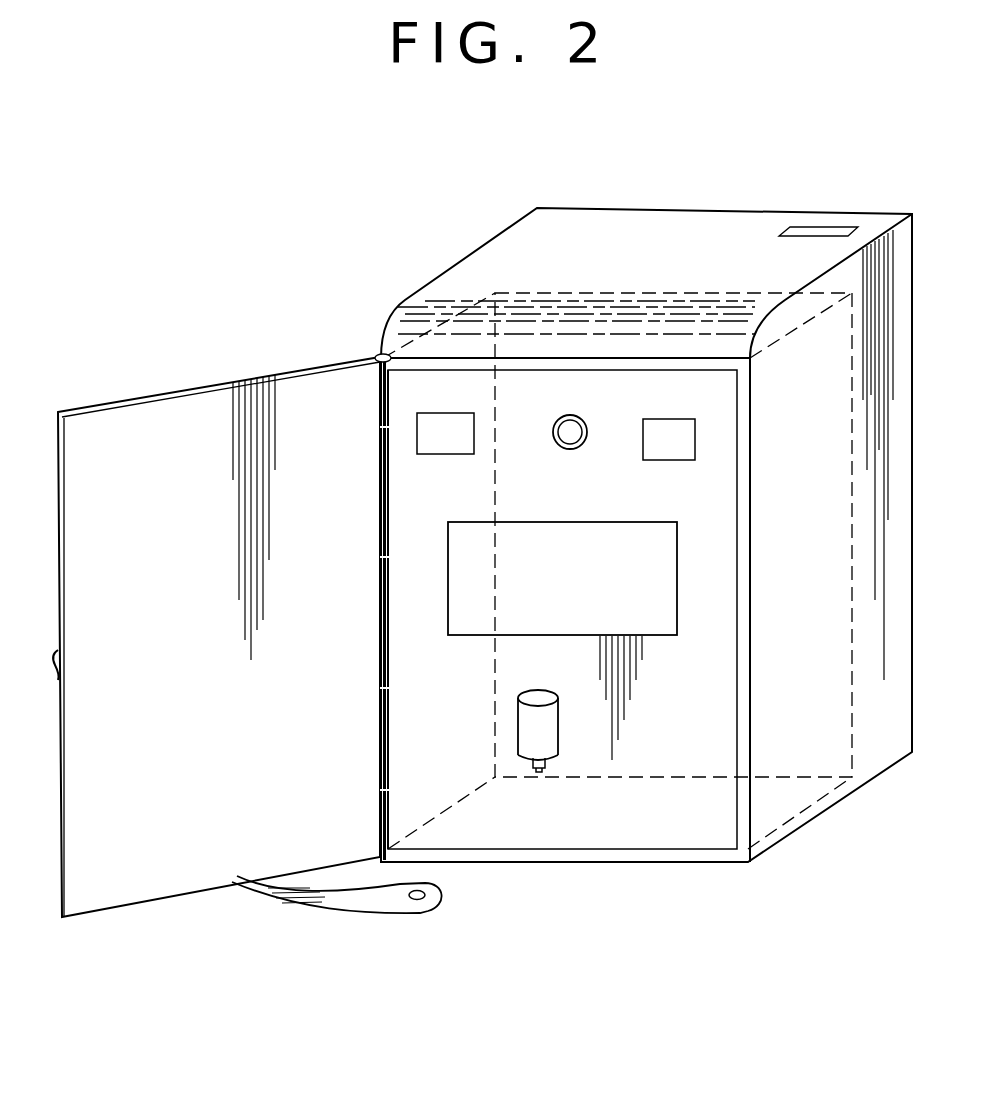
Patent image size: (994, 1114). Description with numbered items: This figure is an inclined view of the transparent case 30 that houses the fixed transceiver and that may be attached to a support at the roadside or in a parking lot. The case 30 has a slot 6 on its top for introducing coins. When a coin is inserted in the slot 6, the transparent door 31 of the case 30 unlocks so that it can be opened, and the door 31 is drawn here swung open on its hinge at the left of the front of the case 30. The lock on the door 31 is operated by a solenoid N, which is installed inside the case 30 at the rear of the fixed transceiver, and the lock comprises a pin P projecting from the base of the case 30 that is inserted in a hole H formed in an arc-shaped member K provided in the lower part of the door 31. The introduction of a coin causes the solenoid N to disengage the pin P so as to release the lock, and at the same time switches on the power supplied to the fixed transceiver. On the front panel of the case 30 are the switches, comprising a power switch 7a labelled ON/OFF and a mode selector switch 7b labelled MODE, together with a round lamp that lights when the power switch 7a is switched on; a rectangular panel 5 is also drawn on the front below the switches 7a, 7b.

The transparent case 30 is at (608, 207).
The slot 6 is at (823, 230).
The transparent door 31 is at (185, 392).
The power switch 7a is at (440, 455).
The mode selector switch 7b is at (668, 460).
The display 5 is at (660, 638).
The solenoid N is at (558, 730).
The pin P is at (538, 772).
The arc-shaped member K is at (300, 912).
The hole H is at (422, 900).